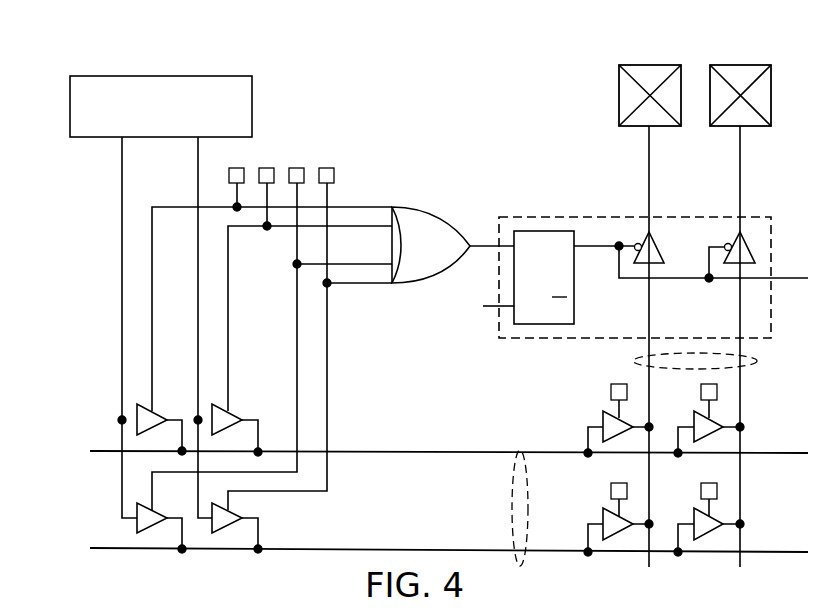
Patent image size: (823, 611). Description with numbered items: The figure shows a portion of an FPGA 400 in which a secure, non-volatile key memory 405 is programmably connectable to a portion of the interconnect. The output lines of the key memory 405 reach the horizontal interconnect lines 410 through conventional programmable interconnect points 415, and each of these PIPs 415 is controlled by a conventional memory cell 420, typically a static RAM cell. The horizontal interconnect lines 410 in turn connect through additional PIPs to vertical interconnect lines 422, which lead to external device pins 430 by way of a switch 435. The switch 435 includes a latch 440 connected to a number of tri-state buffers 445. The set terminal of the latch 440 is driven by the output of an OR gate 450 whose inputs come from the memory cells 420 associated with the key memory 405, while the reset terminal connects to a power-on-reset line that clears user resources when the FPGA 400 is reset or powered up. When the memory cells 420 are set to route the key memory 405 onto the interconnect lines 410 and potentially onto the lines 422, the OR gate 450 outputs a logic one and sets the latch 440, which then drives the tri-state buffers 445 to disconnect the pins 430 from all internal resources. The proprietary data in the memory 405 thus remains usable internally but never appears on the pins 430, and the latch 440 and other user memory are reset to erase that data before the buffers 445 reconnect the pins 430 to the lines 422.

The FPGA 400 is at (117, 59).
The secure non-volatile memory 405 is at (161, 297).
The horizontal interconnect lines 410 is at (520, 445).
The programmable interconnect points 415 is at (233, 412).
The memory cell 420 is at (237, 168).
The vertical interconnect lines 422 is at (637, 358).
The external device pins 430 is at (619, 82).
The switch 435 is at (592, 216).
The latch 440 is at (534, 277).
The tri-state buffers 445 is at (738, 234).
The OR gate 450 is at (453, 245).